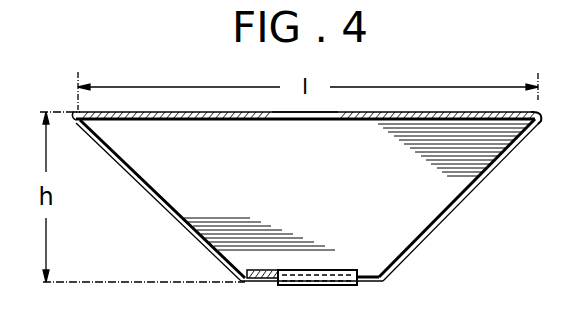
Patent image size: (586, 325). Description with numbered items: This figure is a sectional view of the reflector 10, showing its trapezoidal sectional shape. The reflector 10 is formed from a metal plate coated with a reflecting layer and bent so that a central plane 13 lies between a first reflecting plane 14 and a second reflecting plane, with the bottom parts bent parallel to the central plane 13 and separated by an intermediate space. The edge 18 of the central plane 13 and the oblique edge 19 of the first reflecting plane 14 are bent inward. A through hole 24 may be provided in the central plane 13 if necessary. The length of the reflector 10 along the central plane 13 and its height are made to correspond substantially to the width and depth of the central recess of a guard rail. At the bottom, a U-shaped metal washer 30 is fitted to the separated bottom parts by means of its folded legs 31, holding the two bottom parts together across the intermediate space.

The reflector 10 is at (319, 217).
The central plane 13 is at (200, 121).
The first reflecting plane 14 is at (296, 213).
The upper edge of the central plane 18 is at (541, 126).
The oblique edge of the first reflecting plane 19 is at (420, 239).
The through hole 24 is at (300, 121).
The U-shaped metal washer 30 is at (257, 282).
The folded leg 31 is at (318, 282).